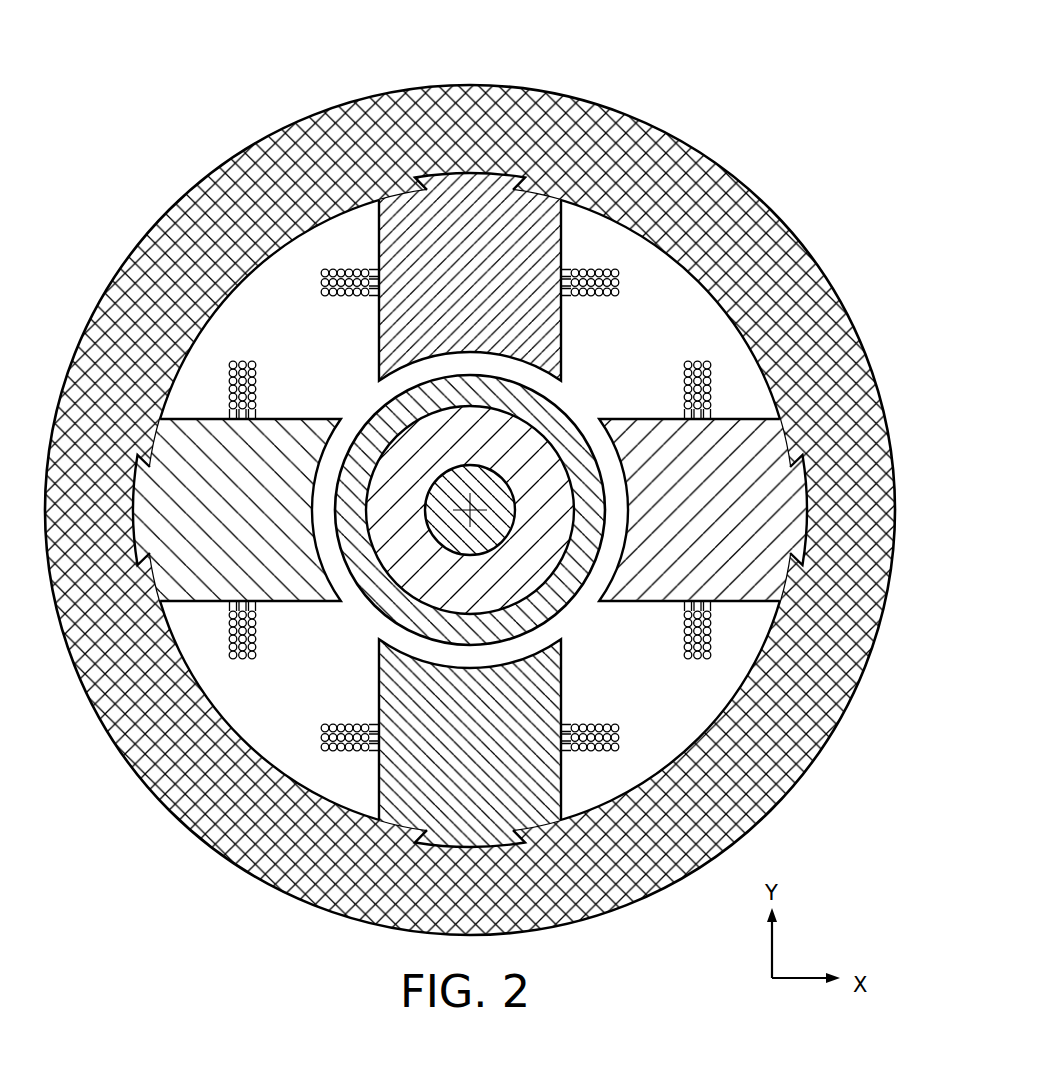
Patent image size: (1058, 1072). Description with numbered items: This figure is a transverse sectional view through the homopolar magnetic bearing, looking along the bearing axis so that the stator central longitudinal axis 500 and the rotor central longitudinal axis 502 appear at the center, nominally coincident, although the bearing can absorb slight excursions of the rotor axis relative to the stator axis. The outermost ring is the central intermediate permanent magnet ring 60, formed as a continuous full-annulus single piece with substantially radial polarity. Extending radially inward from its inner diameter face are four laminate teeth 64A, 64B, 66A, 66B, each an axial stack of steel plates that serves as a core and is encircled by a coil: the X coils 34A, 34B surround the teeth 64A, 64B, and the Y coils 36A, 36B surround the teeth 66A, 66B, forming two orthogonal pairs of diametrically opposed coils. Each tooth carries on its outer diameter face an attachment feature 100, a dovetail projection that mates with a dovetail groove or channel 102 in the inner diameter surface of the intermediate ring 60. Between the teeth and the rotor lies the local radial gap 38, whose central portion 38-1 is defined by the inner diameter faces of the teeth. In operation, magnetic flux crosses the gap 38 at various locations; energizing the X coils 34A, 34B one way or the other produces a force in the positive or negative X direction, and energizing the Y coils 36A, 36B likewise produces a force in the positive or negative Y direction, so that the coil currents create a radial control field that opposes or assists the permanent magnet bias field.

The attachment feature 100 is at (487, 852).
The central intermediate permanent magnet ring 60 is at (850, 525).
The laminate tooth 66B is at (520, 234).
The laminate tooth 66A is at (399, 777).
The laminate tooth 64A is at (767, 499).
The laminate tooth 64B is at (212, 567).
The Y coil 36B is at (603, 253).
The Y coil 36A is at (634, 733).
The X coil 34A is at (710, 348).
The X coil 34B is at (214, 379).
The dovetail groove 102 is at (456, 840).
The local radial gap 38 is at (617, 501).
The central portion of the gap 38-1 is at (332, 571).
The stator central longitudinal axis 500 is at (536, 569).
The rotor central longitudinal axis 502 is at (470, 510).